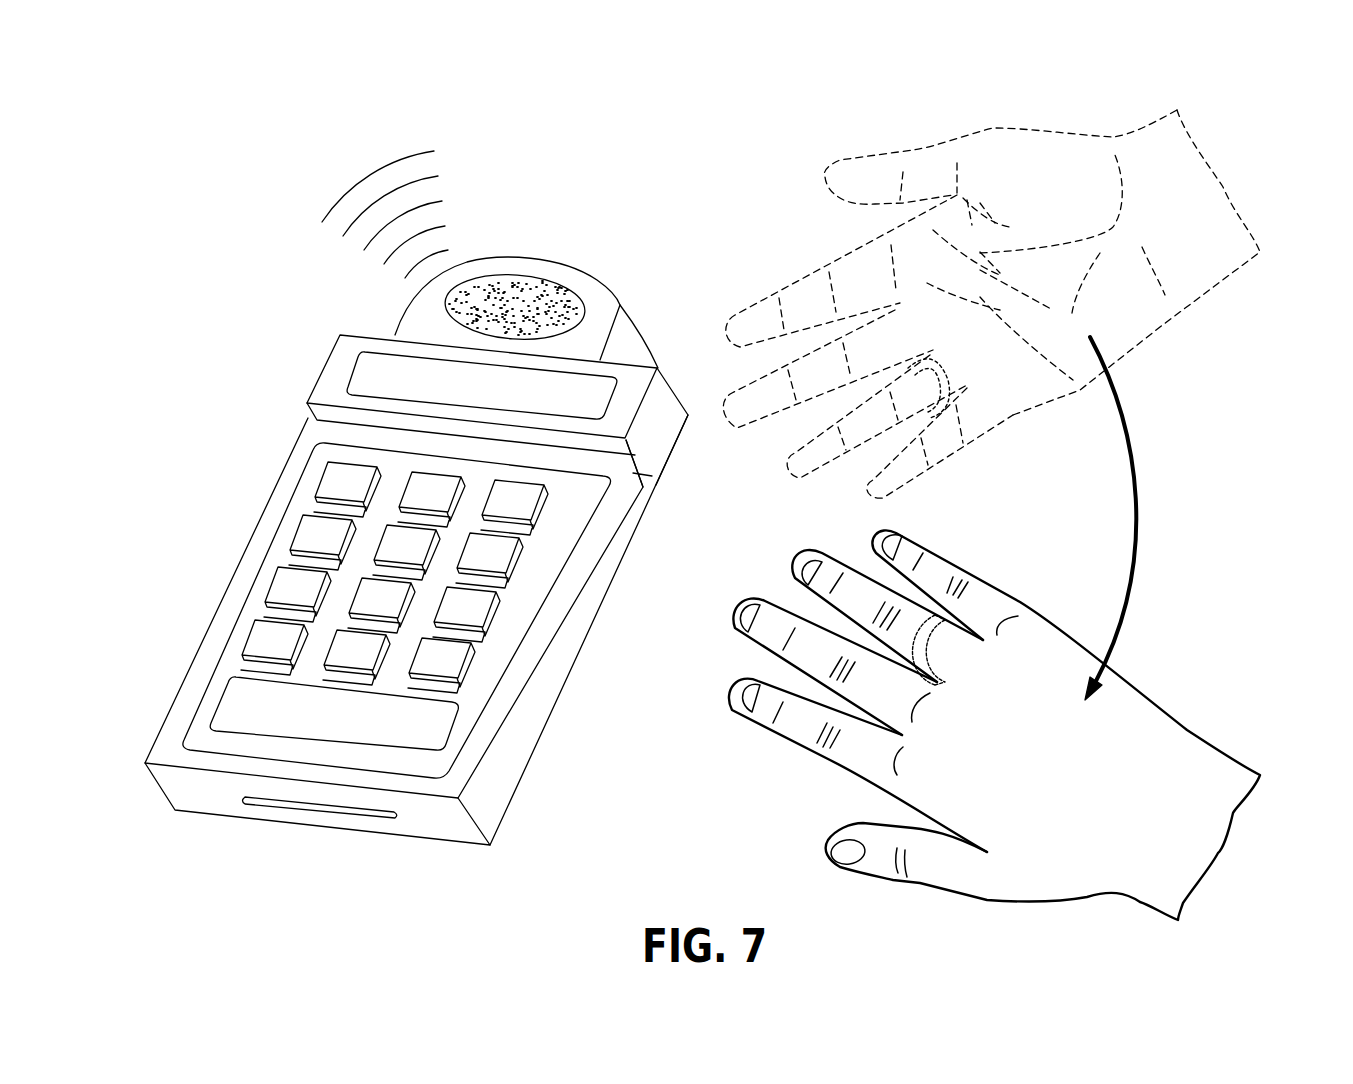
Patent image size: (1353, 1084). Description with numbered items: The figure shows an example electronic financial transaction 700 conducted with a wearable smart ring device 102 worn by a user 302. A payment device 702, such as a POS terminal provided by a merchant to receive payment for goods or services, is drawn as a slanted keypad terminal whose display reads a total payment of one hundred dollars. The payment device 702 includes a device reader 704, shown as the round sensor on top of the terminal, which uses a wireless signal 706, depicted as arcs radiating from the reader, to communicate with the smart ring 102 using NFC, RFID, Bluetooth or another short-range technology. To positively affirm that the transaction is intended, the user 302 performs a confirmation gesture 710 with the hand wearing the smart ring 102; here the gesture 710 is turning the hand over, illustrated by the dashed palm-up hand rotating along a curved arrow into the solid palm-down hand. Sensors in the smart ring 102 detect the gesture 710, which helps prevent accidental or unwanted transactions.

The electronic financial transaction 700 is at (697, 99).
The payment device 702 is at (250, 540).
The device reader 704 is at (517, 292).
The wireless signal 706 is at (375, 170).
The confirmation gesture 710 is at (1142, 513).
The user 302 is at (729, 701).
The wearable smart ring device 102 is at (950, 657).